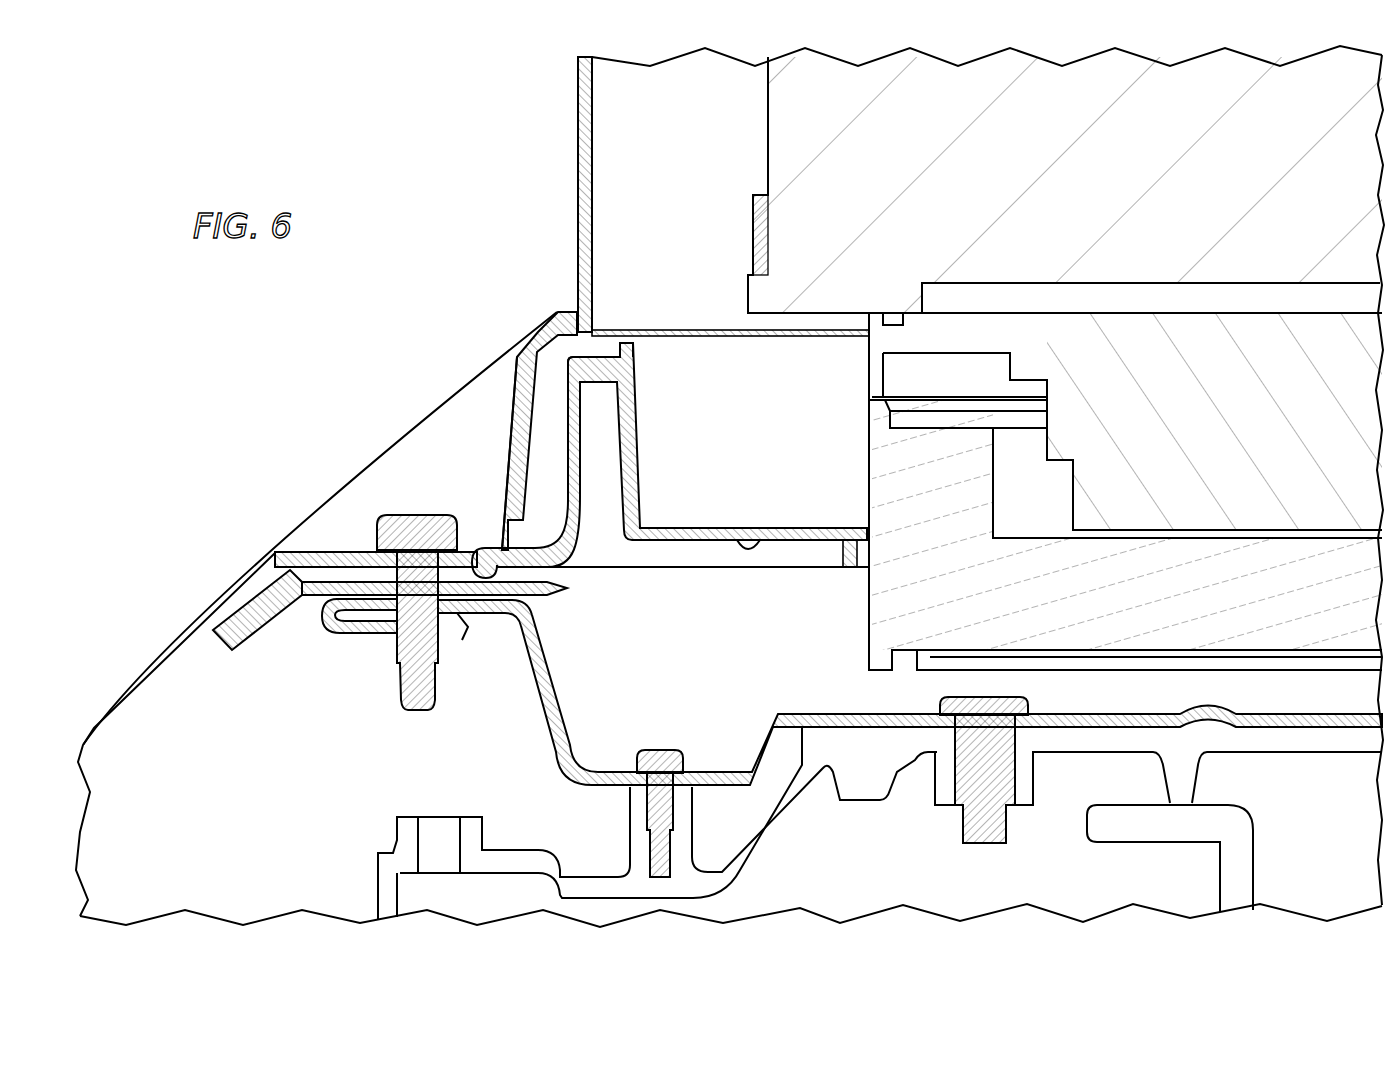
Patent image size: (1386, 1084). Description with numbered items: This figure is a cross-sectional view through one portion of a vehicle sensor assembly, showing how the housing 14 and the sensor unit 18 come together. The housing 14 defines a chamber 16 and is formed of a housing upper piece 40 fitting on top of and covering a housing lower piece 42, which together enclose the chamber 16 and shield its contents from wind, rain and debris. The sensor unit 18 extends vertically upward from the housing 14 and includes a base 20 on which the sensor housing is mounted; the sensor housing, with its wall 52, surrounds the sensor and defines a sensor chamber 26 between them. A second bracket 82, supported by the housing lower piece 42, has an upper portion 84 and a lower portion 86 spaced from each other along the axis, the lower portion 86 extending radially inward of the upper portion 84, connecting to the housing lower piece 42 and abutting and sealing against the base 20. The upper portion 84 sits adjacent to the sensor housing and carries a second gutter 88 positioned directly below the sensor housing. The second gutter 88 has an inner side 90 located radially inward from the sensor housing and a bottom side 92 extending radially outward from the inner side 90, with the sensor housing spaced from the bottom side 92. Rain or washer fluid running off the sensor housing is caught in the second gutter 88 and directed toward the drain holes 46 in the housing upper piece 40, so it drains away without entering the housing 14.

The housing 14 is at (202, 613).
The chamber 16 is at (223, 832).
The sensor unit 18 is at (579, 152).
The base 20 is at (868, 614).
The sensor chamber 26 is at (633, 205).
The housing upper piece 40 is at (543, 320).
The housing lower piece 42 is at (505, 850).
The drain holes 46 is at (500, 513).
The wall 52 is at (577, 110).
The second bracket 82 is at (641, 463).
The upper portion 84 is at (638, 400).
The lower portion 86 is at (758, 538).
The second gutter 88 is at (597, 350).
The inner side 90 is at (627, 343).
The bottom side 92 is at (576, 350).